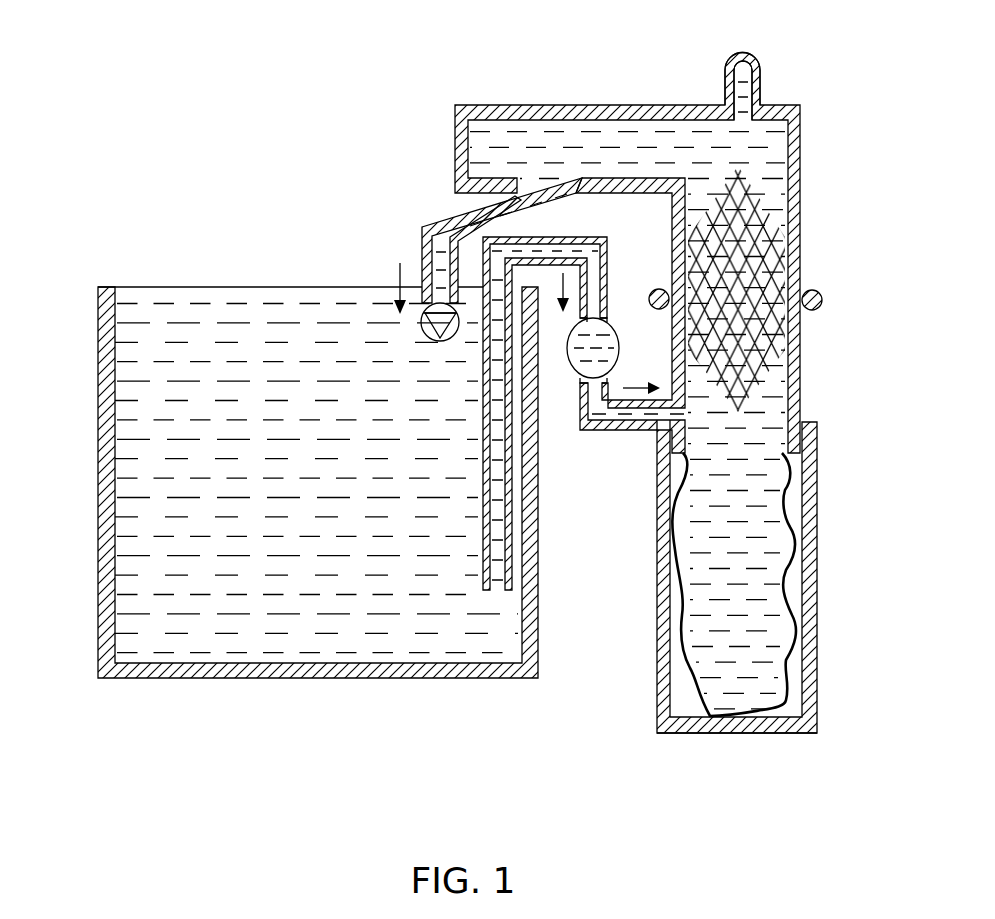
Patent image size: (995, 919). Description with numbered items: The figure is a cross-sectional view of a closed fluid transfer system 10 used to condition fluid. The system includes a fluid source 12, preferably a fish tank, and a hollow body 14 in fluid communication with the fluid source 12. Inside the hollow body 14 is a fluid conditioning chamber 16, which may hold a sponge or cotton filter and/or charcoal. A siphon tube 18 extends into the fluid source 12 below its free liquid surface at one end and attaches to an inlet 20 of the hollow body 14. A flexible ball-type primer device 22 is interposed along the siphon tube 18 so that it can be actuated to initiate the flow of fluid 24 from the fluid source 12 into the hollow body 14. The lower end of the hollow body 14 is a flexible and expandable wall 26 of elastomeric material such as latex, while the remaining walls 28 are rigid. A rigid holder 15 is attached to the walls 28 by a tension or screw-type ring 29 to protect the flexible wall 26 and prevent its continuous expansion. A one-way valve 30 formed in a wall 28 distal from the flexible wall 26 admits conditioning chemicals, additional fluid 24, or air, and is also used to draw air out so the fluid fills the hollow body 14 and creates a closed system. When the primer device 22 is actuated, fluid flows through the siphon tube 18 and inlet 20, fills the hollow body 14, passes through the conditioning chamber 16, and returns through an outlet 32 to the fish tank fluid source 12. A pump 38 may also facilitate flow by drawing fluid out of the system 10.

The closed fluid transfer system 10 is at (86, 222).
The fluid source 12 is at (97, 425).
The hollow body 14 is at (803, 380).
The rigid holder 15 is at (657, 710).
The fluid conditioning chamber 16 is at (790, 243).
The siphon tube 18 is at (492, 566).
The inlet 20 is at (818, 257).
The primer device 22 is at (571, 352).
The fluid 24 is at (203, 307).
The flexible and expandable wall 26 is at (794, 582).
The walls 28 is at (622, 104).
The tension or screw-type ring 29 is at (818, 437).
The one-way valve 30 is at (762, 70).
The outlet 32 is at (420, 250).
The pump 38 is at (410, 330).